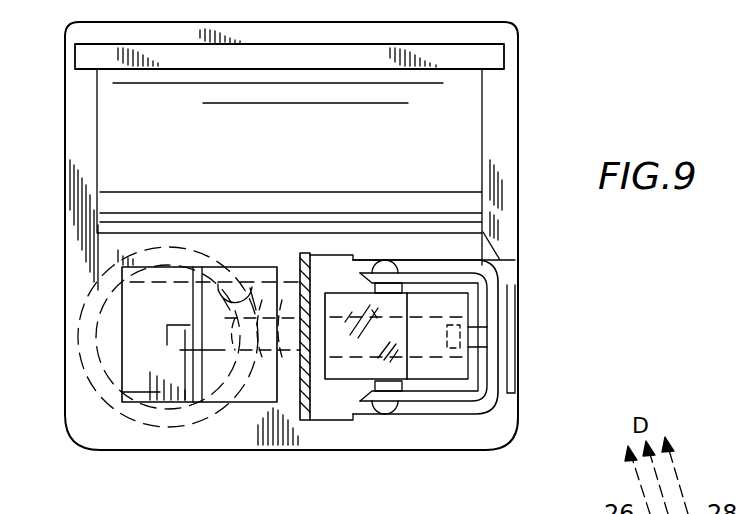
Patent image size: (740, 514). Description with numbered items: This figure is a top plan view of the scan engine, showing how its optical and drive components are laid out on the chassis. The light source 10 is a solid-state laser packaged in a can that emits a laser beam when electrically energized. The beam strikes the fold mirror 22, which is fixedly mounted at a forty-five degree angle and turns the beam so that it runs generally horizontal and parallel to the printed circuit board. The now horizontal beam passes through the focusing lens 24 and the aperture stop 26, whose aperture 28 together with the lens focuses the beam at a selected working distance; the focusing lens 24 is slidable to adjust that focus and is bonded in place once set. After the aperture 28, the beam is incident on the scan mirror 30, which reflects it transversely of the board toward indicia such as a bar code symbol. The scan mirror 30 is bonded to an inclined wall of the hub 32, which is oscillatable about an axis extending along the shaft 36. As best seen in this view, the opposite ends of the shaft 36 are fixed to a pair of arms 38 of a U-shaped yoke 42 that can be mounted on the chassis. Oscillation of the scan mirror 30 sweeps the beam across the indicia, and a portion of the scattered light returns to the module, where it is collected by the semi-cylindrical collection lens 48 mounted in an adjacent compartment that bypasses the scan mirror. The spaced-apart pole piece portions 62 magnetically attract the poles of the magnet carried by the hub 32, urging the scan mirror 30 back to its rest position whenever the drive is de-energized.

The light source 10 is at (86, 445).
The fold mirror 22 is at (143, 380).
The focusing lens 24 is at (222, 397).
The aperture stop 26 is at (305, 422).
The aperture 28 is at (312, 357).
The scan mirror 30 is at (347, 382).
The hub 32 is at (438, 357).
The shaft 36 is at (402, 397).
The arms 38 is at (453, 278).
The U-shaped yoke 42 is at (486, 308).
The collection lens 48 is at (459, 107).
The pole piece portions 62 is at (509, 352).